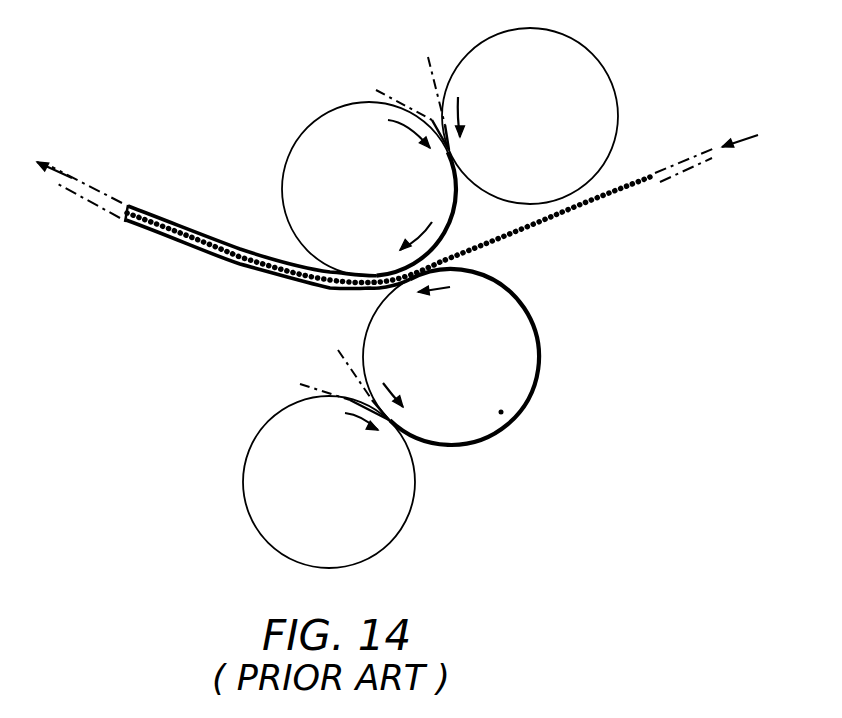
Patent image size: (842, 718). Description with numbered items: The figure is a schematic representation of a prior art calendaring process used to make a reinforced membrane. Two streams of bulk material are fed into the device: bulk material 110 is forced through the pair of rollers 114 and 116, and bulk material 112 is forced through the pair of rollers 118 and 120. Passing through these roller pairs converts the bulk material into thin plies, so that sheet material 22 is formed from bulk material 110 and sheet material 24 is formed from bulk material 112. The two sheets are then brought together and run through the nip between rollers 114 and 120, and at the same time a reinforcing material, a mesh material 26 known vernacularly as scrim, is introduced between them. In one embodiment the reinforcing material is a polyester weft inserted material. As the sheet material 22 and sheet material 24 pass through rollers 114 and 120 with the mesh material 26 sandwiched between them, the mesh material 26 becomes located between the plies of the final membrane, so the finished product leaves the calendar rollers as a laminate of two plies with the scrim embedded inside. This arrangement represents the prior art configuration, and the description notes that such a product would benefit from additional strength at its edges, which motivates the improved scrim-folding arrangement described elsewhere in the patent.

The sheet material 22 is at (452, 228).
The sheet material 24 is at (508, 290).
The mesh material 26 is at (567, 212).
The bulk material 110 is at (447, 148).
The bulk material 112 is at (388, 418).
The roller 114 is at (300, 157).
The roller 116 is at (603, 110).
The roller 118 is at (255, 470).
The roller 120 is at (501, 412).